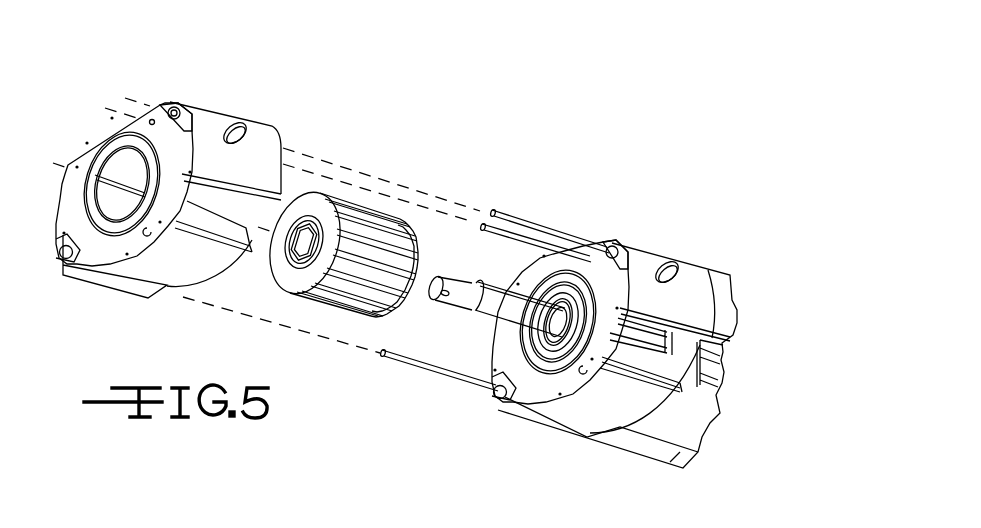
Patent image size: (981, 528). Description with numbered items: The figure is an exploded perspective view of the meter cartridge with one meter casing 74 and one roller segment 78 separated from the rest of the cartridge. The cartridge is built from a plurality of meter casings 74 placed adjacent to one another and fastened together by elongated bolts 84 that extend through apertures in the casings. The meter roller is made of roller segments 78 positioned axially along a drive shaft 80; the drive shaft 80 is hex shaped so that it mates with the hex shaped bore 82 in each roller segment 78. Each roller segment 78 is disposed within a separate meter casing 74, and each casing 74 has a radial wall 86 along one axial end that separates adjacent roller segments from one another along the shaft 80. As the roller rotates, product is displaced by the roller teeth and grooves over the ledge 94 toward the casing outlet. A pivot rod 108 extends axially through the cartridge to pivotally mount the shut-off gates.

The meter casing 74 is at (218, 117).
The roller segment 78 is at (360, 213).
The drive shaft 80 is at (485, 312).
The hex shaped bore 82 is at (297, 248).
The elongated bolt 84 is at (527, 222).
The radial wall 86 is at (105, 134).
The ledge 94 is at (214, 205).
The pivot rod 108 is at (500, 240).